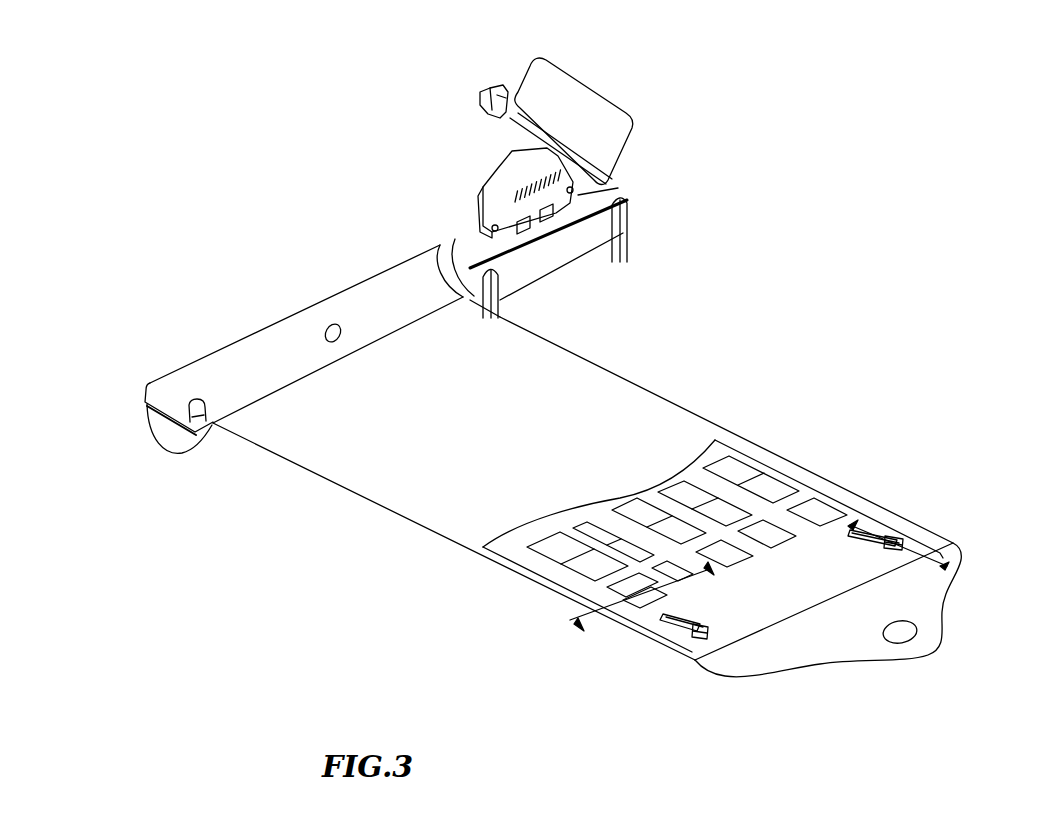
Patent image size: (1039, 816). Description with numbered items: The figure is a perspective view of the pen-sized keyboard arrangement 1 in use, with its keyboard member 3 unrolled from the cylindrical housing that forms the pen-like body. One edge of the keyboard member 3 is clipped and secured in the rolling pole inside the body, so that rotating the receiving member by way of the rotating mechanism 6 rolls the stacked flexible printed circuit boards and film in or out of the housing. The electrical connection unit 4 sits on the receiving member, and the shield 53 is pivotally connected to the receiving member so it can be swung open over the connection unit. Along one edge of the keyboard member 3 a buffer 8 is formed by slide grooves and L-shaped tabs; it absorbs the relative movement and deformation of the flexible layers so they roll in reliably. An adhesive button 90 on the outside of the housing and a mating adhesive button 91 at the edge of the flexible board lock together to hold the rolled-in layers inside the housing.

The pen-sized keyboard arrangement 1 is at (228, 332).
The keyboard member 3 is at (770, 444).
The electrical connection unit 4 is at (494, 155).
The rotating mechanism 6 is at (562, 221).
The buffer 8 is at (908, 536).
The shield 53 is at (628, 112).
The adhesive button 90 is at (338, 318).
The adhesive button 91 is at (893, 642).